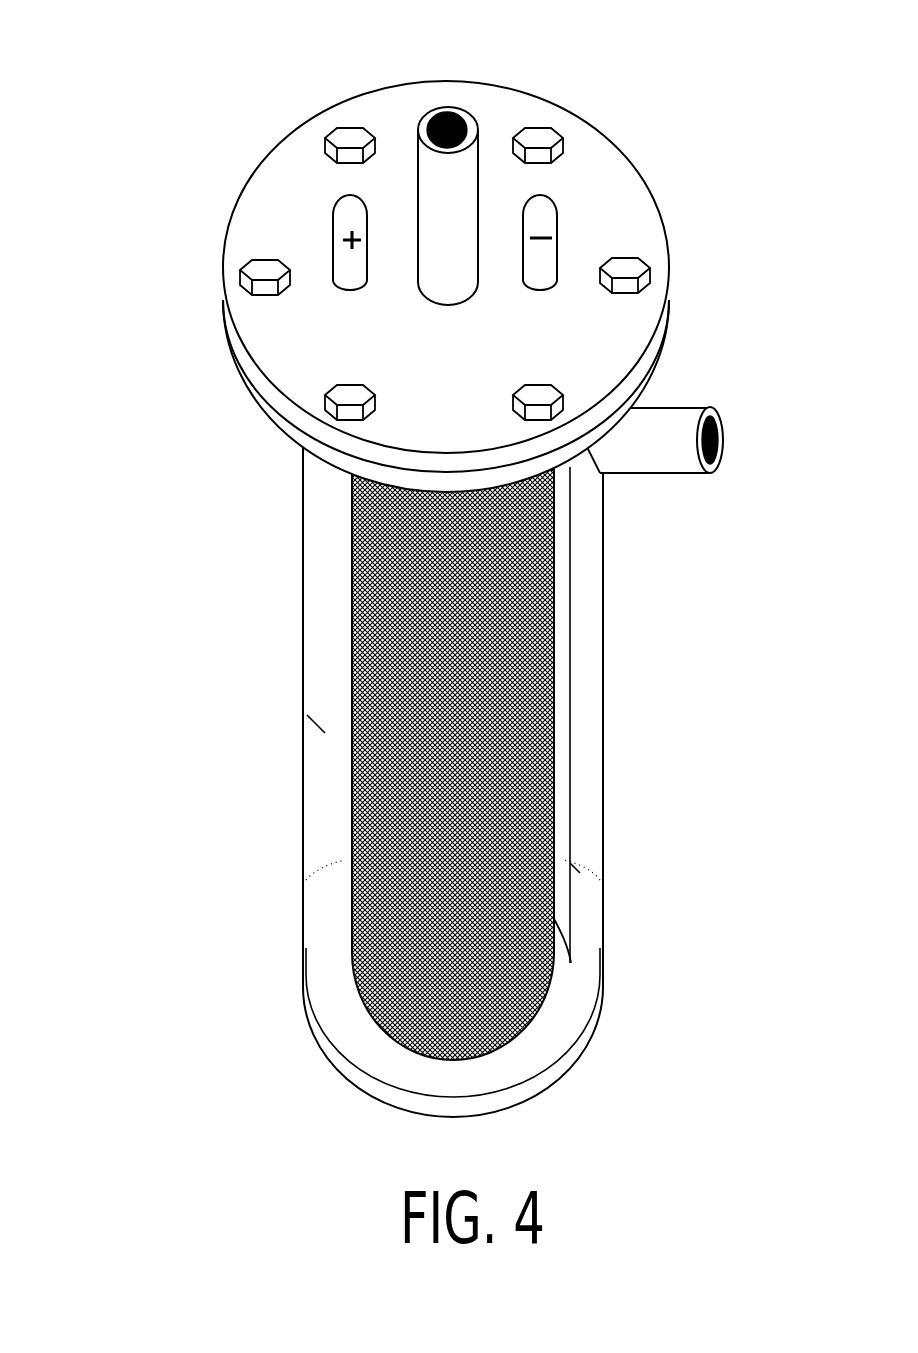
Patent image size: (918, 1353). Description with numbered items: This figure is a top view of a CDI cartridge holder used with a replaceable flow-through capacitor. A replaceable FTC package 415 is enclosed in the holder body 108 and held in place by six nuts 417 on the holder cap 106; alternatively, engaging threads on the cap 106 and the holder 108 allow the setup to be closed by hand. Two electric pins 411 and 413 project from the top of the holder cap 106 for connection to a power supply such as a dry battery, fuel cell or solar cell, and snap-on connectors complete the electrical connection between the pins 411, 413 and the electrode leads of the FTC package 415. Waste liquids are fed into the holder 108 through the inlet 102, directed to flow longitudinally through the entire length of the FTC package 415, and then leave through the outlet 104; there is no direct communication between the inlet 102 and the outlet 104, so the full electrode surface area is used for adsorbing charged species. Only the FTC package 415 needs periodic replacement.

The inlet 102 is at (468, 107).
The outlet 104 is at (689, 373).
The holder cap 106 is at (251, 218).
The holder body 108 is at (627, 729).
The electric pin 411 is at (317, 197).
The electric pin 413 is at (571, 195).
The FTC package 415 is at (316, 768).
The nut 417 is at (220, 252).